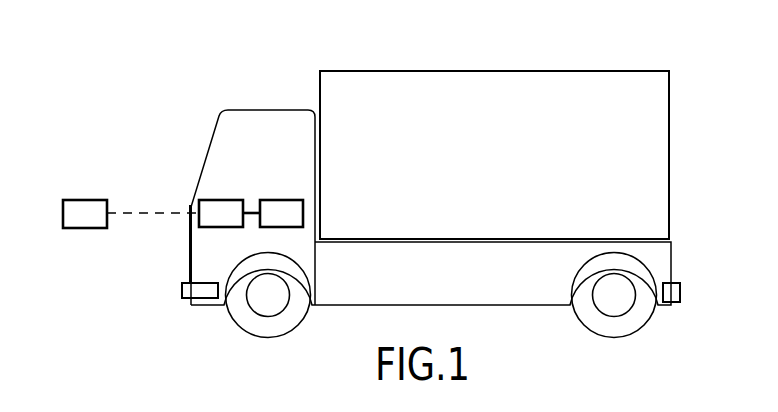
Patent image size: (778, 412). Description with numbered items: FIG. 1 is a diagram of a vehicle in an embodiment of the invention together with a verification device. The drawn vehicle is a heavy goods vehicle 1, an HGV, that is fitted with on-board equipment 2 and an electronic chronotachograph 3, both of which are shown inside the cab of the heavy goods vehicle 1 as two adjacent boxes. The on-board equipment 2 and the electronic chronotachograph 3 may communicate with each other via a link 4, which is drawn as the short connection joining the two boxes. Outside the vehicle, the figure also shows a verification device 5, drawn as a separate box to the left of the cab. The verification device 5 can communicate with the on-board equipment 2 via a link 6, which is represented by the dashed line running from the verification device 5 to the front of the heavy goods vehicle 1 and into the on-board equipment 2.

The heavy goods vehicle 1 is at (224, 88).
The on-board equipment 2 is at (232, 210).
The electronic chronotachograph 3 is at (291, 210).
The link 4 is at (251, 210).
The verification device 5 is at (95, 210).
The link 6 is at (160, 210).